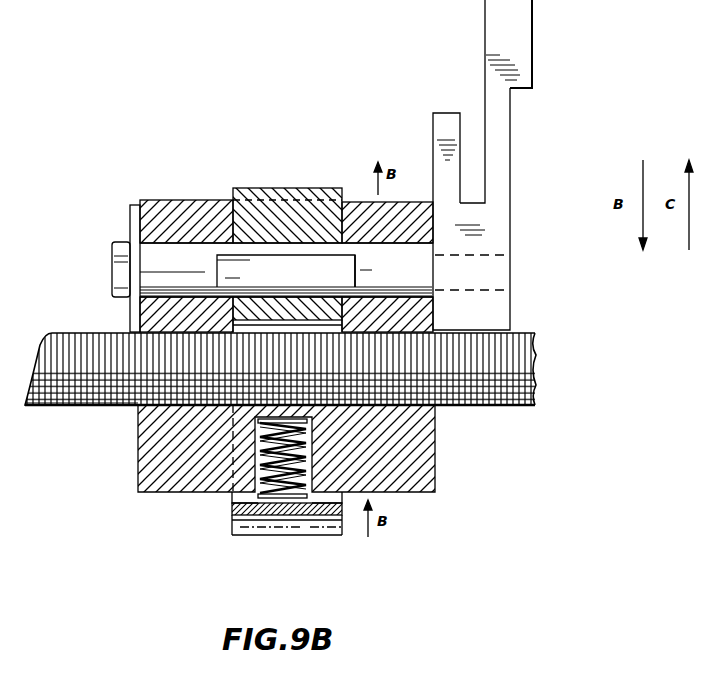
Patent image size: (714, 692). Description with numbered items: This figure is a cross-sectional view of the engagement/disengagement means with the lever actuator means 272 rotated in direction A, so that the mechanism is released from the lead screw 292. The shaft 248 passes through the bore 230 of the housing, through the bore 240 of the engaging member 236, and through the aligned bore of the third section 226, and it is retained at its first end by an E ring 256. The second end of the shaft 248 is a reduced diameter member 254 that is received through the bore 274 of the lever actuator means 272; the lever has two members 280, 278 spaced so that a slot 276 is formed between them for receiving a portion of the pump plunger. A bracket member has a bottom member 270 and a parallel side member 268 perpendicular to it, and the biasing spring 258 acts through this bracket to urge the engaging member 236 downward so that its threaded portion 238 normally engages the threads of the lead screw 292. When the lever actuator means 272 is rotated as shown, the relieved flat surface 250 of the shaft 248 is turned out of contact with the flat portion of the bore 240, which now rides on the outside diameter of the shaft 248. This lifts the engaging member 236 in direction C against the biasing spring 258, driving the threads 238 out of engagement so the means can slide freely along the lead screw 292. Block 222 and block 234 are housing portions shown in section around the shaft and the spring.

The right housing block 222 is at (420, 202).
The third section 226 is at (172, 200).
The bore 230 is at (190, 246).
The lower block 234 is at (255, 470).
The engaging member 236 is at (270, 200).
The threaded portion 238 is at (138, 405).
The bore 240 is at (288, 258).
The shaft 248 is at (396, 281).
The flat surface 250 is at (328, 258).
The reduced diameter member 254 is at (498, 279).
The E ring 256 is at (128, 213).
The biasing spring 258 is at (300, 500).
The side member 268 is at (232, 513).
The bottom member 270 is at (252, 516).
The lever actuator means 272 is at (500, 310).
The bore 274 is at (508, 257).
The slot 276 is at (470, 147).
The member 278 is at (527, 7).
The member 280 is at (447, 113).
The lead screw 292 is at (478, 395).